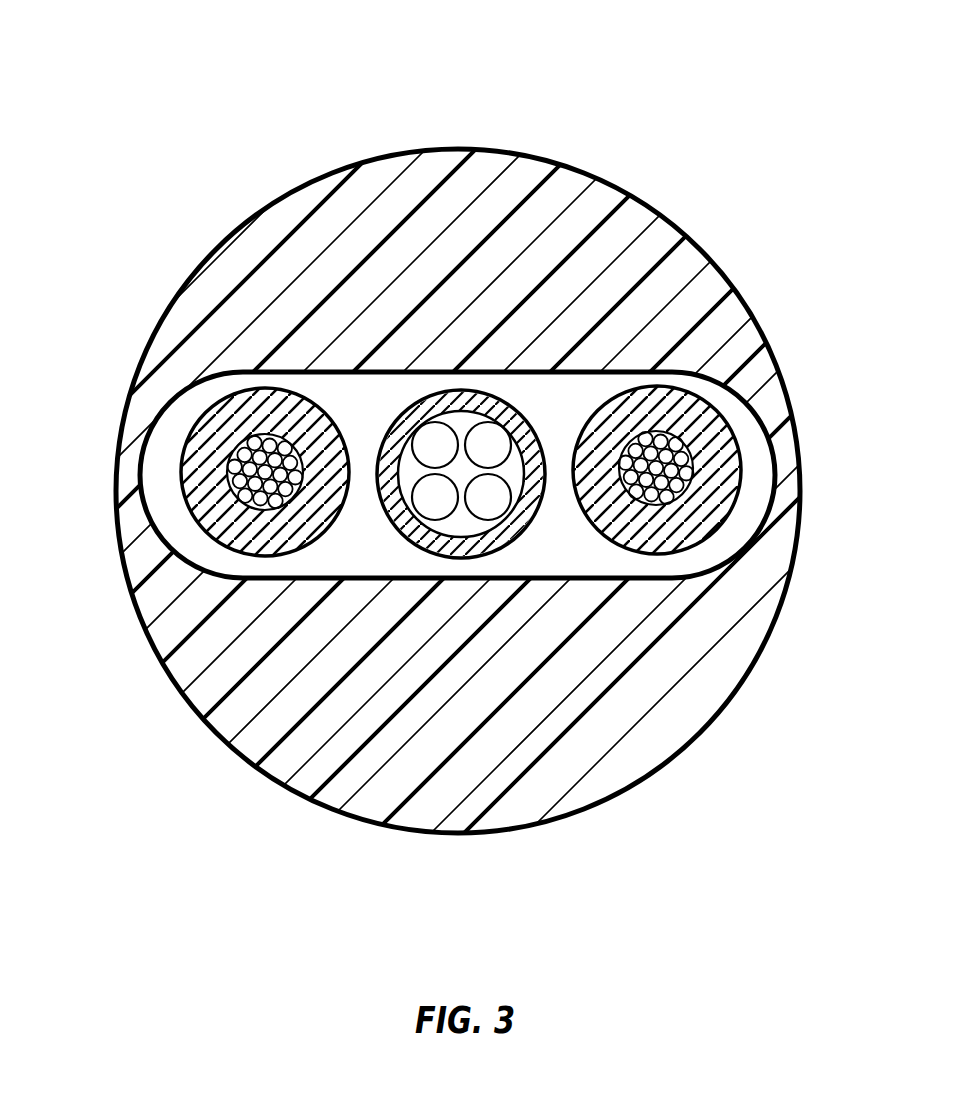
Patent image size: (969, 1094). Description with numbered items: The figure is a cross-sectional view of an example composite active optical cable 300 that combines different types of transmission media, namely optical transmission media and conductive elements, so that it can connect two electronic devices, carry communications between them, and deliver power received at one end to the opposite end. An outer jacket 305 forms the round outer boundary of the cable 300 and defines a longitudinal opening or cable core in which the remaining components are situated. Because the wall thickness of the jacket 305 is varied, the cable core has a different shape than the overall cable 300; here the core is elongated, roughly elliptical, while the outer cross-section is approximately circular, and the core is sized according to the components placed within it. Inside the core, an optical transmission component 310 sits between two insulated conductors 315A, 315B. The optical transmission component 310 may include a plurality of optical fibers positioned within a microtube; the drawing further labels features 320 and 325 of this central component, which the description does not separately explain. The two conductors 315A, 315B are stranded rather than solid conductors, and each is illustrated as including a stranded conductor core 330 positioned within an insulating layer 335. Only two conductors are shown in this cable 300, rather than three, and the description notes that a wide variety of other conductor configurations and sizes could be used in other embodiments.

The cable 300 is at (165, 92).
The outer jacket 305 is at (636, 212).
The optical transmission component 310 is at (422, 562).
The insulated conductor 315A is at (229, 535).
The insulated conductor 315B is at (700, 540).
The central cable element outer jacket 320 is at (475, 287).
The central cable element insulation 325 is at (491, 390).
The stranded conductor core 330 is at (262, 432).
The insulating layer 335 is at (210, 520).